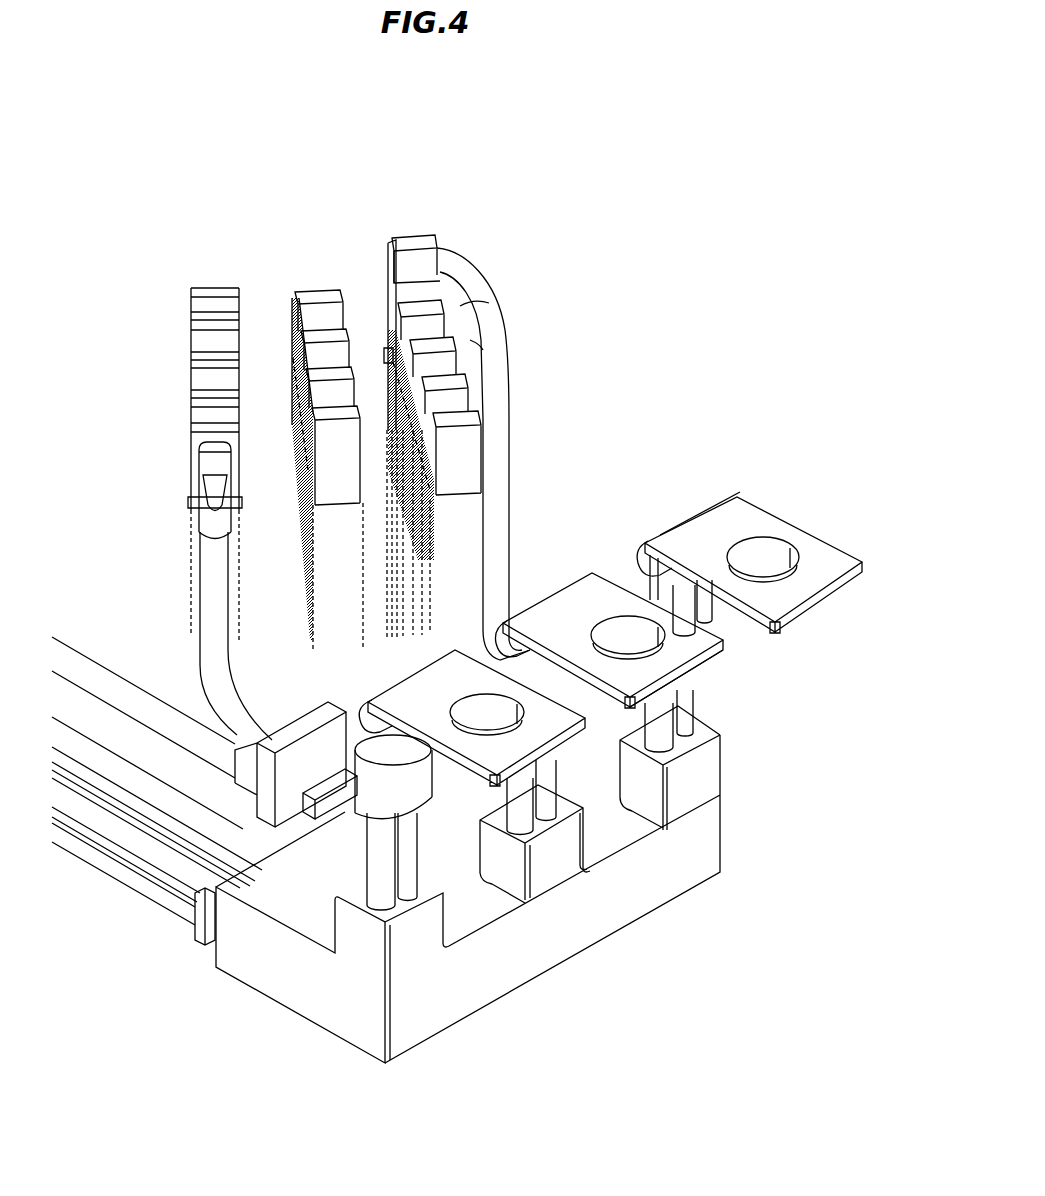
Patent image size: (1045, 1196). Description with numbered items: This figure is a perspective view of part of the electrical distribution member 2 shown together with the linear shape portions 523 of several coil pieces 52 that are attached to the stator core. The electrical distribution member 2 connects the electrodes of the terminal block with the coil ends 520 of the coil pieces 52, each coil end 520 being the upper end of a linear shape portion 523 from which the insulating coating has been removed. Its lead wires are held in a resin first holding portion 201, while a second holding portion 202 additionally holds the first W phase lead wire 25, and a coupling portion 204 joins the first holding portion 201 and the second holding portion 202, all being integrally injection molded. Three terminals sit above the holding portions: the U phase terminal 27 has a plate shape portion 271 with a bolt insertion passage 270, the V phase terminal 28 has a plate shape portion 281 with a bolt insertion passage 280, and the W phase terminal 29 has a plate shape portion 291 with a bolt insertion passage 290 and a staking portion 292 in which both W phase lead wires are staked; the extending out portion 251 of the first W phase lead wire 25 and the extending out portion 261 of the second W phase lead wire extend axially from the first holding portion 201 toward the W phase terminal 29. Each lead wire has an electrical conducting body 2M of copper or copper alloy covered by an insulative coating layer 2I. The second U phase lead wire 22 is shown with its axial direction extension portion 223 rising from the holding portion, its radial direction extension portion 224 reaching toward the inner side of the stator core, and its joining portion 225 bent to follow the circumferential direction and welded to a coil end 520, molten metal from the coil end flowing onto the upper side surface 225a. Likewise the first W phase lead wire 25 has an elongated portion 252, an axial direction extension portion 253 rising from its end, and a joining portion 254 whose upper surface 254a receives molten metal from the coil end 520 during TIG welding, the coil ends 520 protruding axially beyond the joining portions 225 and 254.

The electrical distribution member 2 is at (430, 1049).
The first holding portion 201 is at (283, 987).
The second holding portion 202 is at (293, 728).
The coupling portion 204 is at (353, 747).
The second U phase lead wire 22 is at (490, 415).
The axial direction extension portion 223 is at (497, 518).
The radial direction extension portion 224 is at (483, 343).
The joining portion 225 is at (423, 267).
The upper side surface 225a is at (412, 257).
The electrical conducting body 2M is at (462, 290).
The coating layer 2I is at (477, 323).
The first W phase lead wire 25 is at (195, 606).
The extending out portion 251 is at (410, 848).
The elongated portion 252 is at (262, 728).
The axial direction extension portion 253 is at (207, 540).
The joining portion 254 is at (210, 462).
The upper surface 254a is at (215, 447).
The extending out portion 261 is at (386, 857).
The U phase terminal 27 is at (833, 519).
The bolt insertion passage 270 is at (758, 555).
The plate shape portion 271 is at (727, 512).
The V phase terminal 28 is at (733, 648).
The bolt insertion passage 280 is at (660, 637).
The plate shape portion 281 is at (705, 660).
The W phase terminal 29 is at (600, 748).
The bolt insertion passage 290 is at (545, 770).
The plate shape portion 291 is at (700, 787).
The staking portion 292 is at (425, 848).
The coil piece 52 is at (385, 268).
The coil end 520 is at (190, 453).
The linear shape portion 523 is at (187, 513).